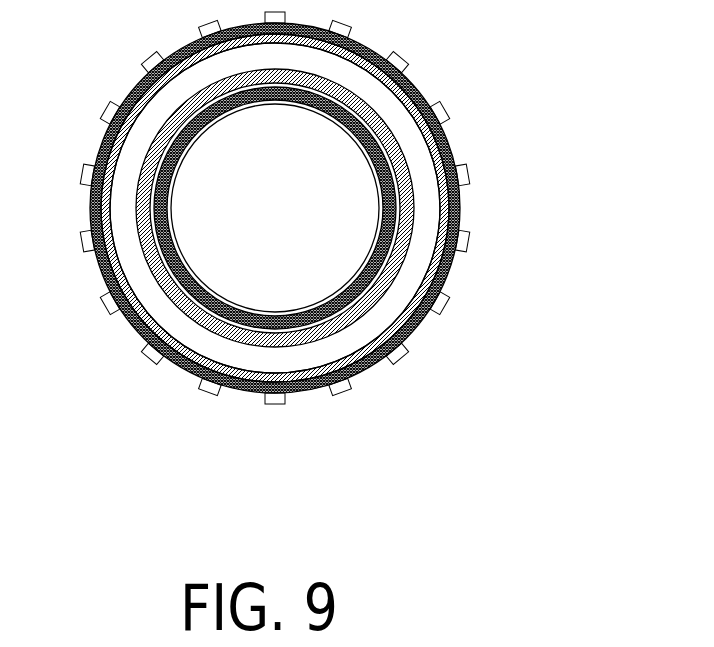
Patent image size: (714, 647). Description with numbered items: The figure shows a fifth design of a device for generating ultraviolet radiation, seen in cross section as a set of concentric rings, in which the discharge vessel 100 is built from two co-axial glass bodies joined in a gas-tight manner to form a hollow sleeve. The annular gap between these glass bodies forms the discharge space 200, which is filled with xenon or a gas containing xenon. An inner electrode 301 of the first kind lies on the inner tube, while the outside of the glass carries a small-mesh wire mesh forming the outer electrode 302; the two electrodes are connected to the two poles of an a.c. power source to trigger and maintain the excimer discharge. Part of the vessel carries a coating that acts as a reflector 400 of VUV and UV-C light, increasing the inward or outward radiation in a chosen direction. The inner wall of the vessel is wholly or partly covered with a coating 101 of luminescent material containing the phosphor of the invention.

The discharge vessel 100 is at (418, 322).
The coating of luminescent material 101 is at (250, 384).
The discharge space 200 is at (135, 123).
The inner electrode 301 is at (327, 112).
The outer electrode 302 is at (468, 175).
The reflector 400 is at (380, 145).